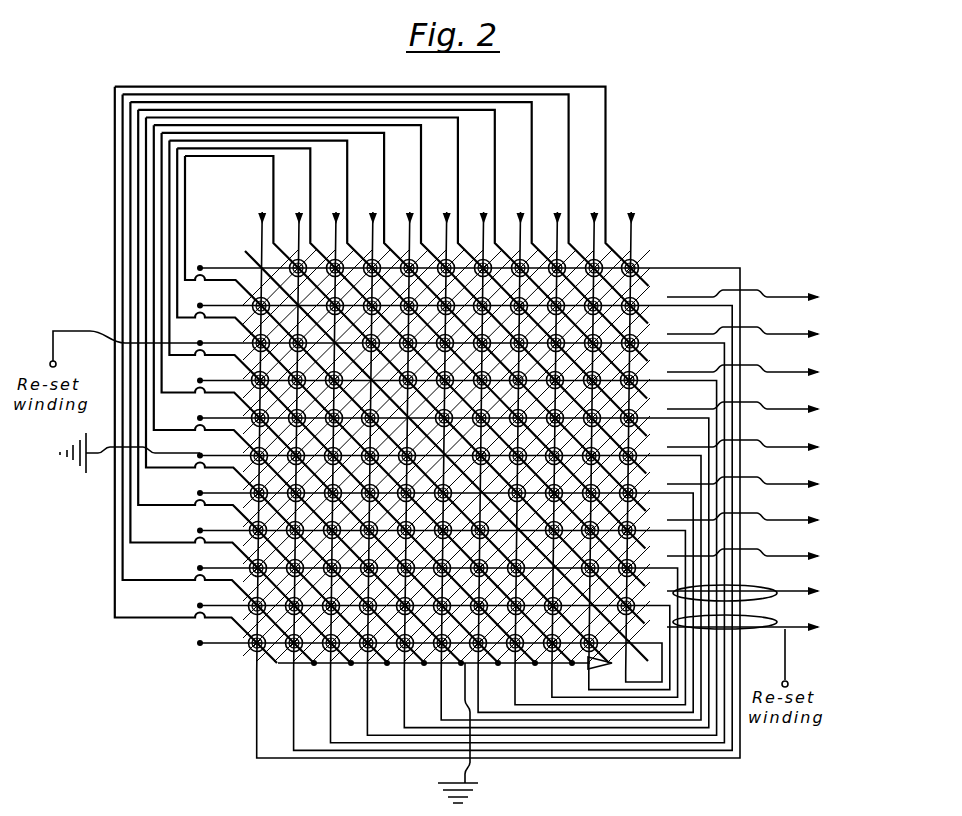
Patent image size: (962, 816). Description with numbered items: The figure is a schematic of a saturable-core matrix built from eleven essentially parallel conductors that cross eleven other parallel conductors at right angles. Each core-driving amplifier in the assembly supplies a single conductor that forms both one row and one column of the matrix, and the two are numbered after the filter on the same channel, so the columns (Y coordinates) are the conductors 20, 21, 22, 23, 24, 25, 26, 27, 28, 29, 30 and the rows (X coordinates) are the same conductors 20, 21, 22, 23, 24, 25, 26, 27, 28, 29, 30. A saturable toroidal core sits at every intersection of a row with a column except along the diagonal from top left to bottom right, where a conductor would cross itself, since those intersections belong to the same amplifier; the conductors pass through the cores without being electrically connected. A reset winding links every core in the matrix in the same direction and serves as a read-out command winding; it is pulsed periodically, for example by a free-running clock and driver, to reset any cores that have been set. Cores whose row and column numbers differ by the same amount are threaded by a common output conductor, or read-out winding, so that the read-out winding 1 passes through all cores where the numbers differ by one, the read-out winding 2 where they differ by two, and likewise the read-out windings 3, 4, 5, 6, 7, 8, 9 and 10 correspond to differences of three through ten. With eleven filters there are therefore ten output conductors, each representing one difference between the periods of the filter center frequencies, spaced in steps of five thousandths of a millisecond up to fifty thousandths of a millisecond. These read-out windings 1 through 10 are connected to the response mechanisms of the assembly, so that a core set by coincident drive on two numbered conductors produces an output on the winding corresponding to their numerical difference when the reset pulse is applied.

The read-out winding 1 is at (754, 627).
The read-out winding 2 is at (754, 591).
The read-out winding 3 is at (754, 556).
The read-out winding 4 is at (754, 520).
The read-out winding 5 is at (754, 484).
The read-out winding 6 is at (754, 447).
The read-out winding 7 is at (754, 409).
The read-out winding 8 is at (754, 372).
The read-out winding 9 is at (754, 334).
The read-out winding 10 is at (758, 297).
The row and column conductor 20 is at (457, 476).
The row and column conductor 21 is at (453, 472).
The row and column conductor 22 is at (449, 468).
The row and column conductor 23 is at (445, 464).
The row and column conductor 24 is at (441, 461).
The row and column conductor 25 is at (438, 457).
The row and column conductor 26 is at (434, 453).
The row and column conductor 27 is at (430, 449).
The row and column conductor 28 is at (426, 445).
The row and column conductor 29 is at (422, 442).
The row and column conductor 30 is at (418, 438).